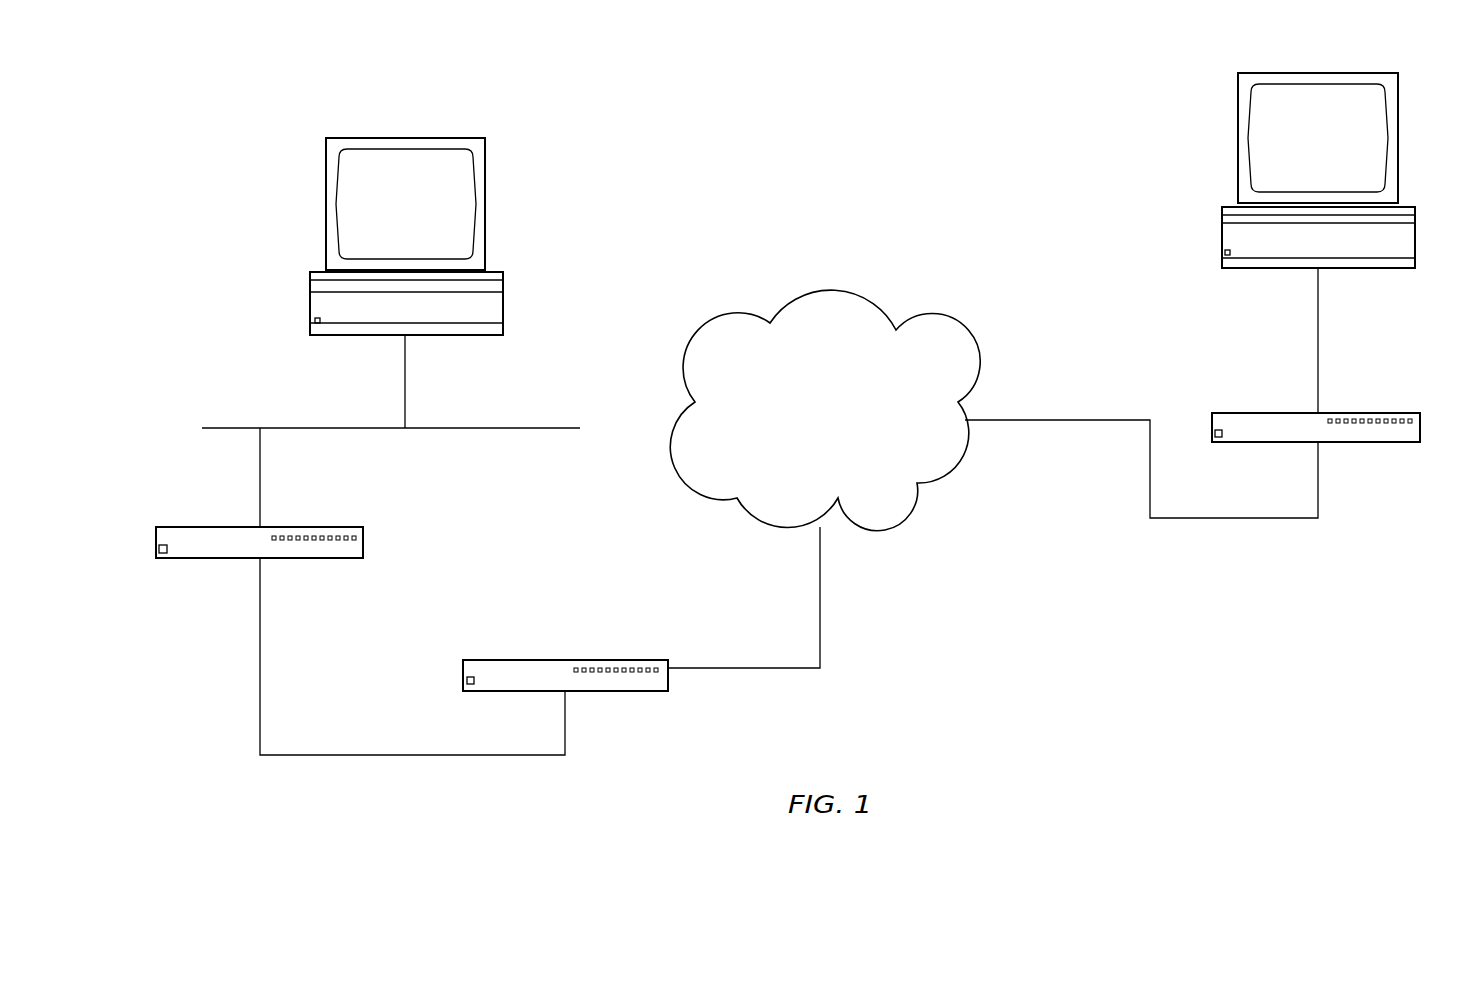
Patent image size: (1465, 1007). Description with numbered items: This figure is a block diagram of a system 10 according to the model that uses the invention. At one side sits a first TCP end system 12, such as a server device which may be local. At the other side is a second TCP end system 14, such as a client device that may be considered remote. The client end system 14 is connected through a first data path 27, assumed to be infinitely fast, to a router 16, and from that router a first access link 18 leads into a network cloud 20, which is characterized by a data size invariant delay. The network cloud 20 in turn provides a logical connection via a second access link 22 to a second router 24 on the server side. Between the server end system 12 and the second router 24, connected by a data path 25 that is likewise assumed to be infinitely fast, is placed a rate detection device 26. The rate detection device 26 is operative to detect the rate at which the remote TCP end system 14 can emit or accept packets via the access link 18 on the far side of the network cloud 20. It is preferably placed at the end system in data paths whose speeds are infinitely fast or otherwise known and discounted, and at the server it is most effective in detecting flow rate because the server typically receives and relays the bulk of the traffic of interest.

The system 10 is at (191, 114).
The first TCP end system 12 is at (323, 232).
The second TCP end system 14 is at (1237, 140).
The router 16 is at (1257, 412).
The first access link 18 is at (1115, 495).
The network cloud 20 is at (830, 288).
The second access link 22 is at (765, 590).
The second router 24 is at (493, 660).
The data path 25 is at (259, 655).
The rate detection device 26 is at (180, 527).
The first data path 27 is at (1322, 322).